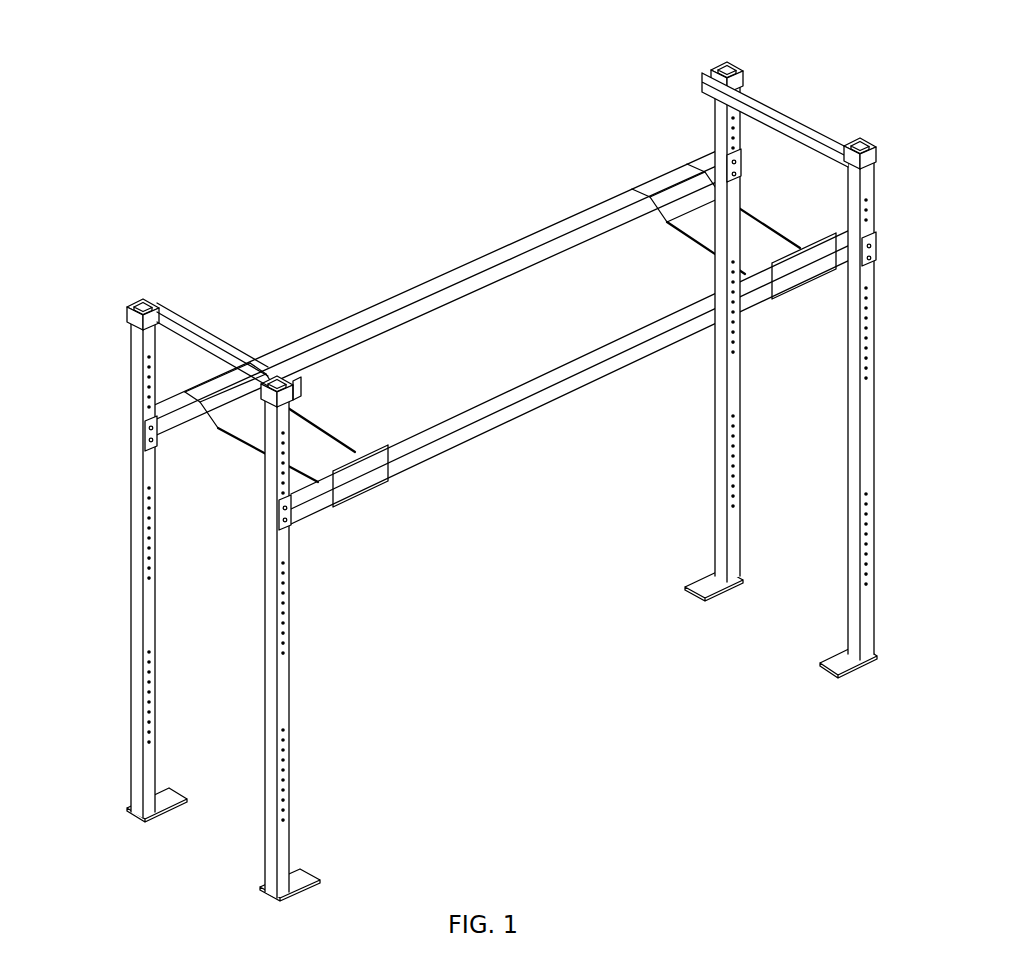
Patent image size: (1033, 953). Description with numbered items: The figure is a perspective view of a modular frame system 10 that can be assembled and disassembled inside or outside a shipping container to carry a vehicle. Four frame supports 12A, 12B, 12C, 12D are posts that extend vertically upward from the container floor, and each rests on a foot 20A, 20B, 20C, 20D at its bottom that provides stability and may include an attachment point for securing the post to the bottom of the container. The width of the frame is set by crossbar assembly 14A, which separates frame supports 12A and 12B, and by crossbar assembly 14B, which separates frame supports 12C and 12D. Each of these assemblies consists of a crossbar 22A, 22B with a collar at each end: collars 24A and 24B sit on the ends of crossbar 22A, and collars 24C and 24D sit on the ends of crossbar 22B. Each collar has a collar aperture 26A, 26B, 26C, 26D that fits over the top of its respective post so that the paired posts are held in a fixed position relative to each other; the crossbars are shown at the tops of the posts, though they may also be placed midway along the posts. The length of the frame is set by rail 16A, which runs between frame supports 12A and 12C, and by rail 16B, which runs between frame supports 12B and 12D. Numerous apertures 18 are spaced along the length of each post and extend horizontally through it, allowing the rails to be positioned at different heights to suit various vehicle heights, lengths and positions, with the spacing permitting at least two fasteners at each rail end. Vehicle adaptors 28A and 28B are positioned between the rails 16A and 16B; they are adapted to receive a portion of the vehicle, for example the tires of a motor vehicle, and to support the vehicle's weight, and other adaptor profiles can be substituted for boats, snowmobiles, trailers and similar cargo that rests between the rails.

The frame system 10 is at (503, 455).
The frame support 12A is at (129, 626).
The frame support 12B is at (292, 706).
The frame support 12C is at (712, 446).
The frame support 12D is at (878, 462).
The crossbar assembly 14A is at (225, 573).
The crossbar assembly 14B is at (777, 344).
The rail 16A is at (447, 282).
The rail 16B is at (513, 408).
The apertures 18 is at (868, 248).
The foot 20A is at (158, 798).
The foot 20B is at (292, 875).
The foot 20C is at (707, 588).
The foot 20D is at (840, 665).
The crossbar 22A is at (185, 317).
The crossbar 22B is at (802, 130).
The collar 24A is at (105, 288).
The collar 24B is at (291, 430).
The collar 24C is at (766, 51).
The collar 24D is at (899, 128).
The collar aperture 26A is at (125, 313).
The collar aperture 26B is at (297, 372).
The collar aperture 26C is at (737, 64).
The collar aperture 26D is at (869, 140).
The vehicle adaptor 28A is at (364, 477).
The vehicle adaptor 28B is at (810, 272).